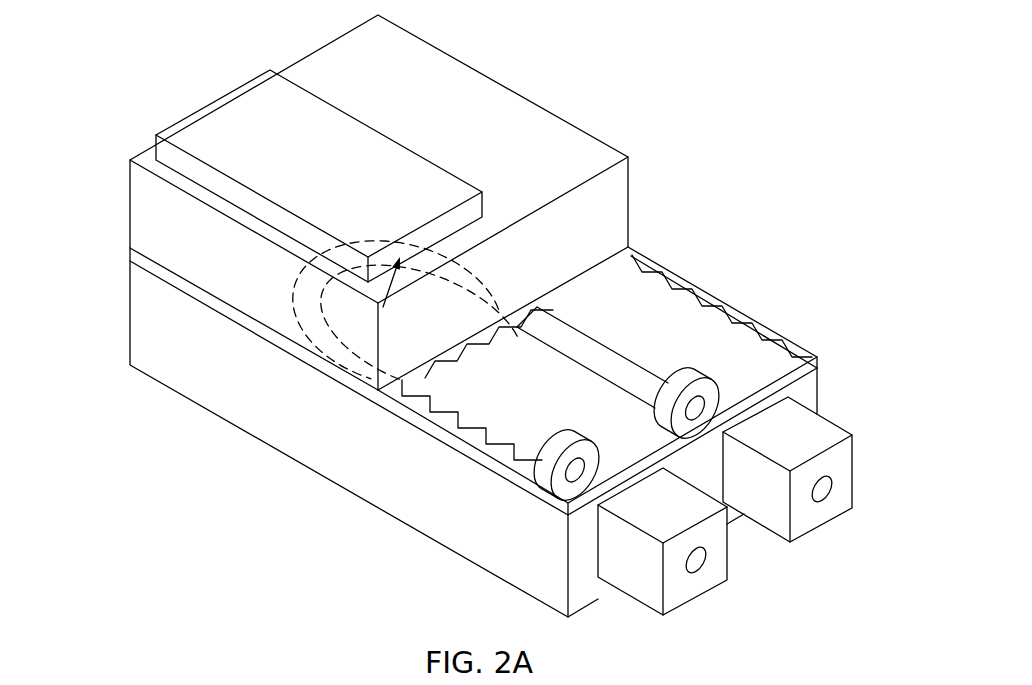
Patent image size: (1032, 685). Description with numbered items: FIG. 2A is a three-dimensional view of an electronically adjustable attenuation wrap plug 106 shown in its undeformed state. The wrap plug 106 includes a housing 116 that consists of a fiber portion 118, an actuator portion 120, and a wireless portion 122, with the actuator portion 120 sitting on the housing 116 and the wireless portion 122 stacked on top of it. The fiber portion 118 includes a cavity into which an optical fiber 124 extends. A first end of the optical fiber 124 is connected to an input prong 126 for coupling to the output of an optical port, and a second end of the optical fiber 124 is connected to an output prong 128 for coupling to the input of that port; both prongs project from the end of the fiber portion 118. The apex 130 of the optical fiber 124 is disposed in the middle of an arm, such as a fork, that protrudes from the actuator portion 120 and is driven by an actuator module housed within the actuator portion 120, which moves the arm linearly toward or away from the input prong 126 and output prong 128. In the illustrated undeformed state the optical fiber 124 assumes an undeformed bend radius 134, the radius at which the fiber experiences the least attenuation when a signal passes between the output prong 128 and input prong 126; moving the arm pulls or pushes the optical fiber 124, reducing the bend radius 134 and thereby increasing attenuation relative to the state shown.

The wrap plug 106 is at (707, 77).
The housing 116 is at (147, 378).
The fiber portion 118 is at (213, 412).
The actuator portion 120 is at (129, 206).
The wireless portion 122 is at (233, 88).
The optical fiber 124 is at (630, 351).
The input prong 126 is at (834, 424).
The output prong 128 is at (713, 585).
The apex 130 is at (300, 272).
The undeformed bend radius 134 is at (392, 283).